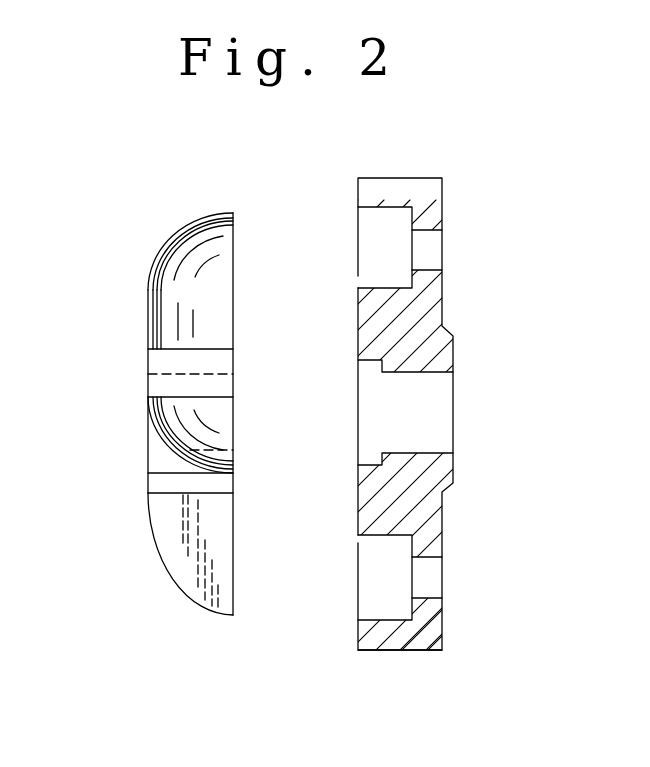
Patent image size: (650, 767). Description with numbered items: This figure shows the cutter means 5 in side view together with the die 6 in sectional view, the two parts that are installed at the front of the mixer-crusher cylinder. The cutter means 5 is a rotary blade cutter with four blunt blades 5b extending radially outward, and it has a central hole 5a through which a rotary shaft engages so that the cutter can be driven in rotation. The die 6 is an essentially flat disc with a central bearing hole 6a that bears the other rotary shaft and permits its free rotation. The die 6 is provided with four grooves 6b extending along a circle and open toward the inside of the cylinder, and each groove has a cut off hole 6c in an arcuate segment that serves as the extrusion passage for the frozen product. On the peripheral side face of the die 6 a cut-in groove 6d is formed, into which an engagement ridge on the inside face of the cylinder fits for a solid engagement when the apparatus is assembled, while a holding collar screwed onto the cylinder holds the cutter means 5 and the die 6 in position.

The cutter means 5 is at (137, 412).
The central hole 5a is at (186, 374).
The blunt blades 5b is at (204, 214).
The die 6 is at (325, 417).
The central bearing hole 6a is at (437, 410).
The grooves 6b is at (372, 252).
The cut off hole 6c is at (432, 252).
The cut-in groove 6d is at (400, 651).